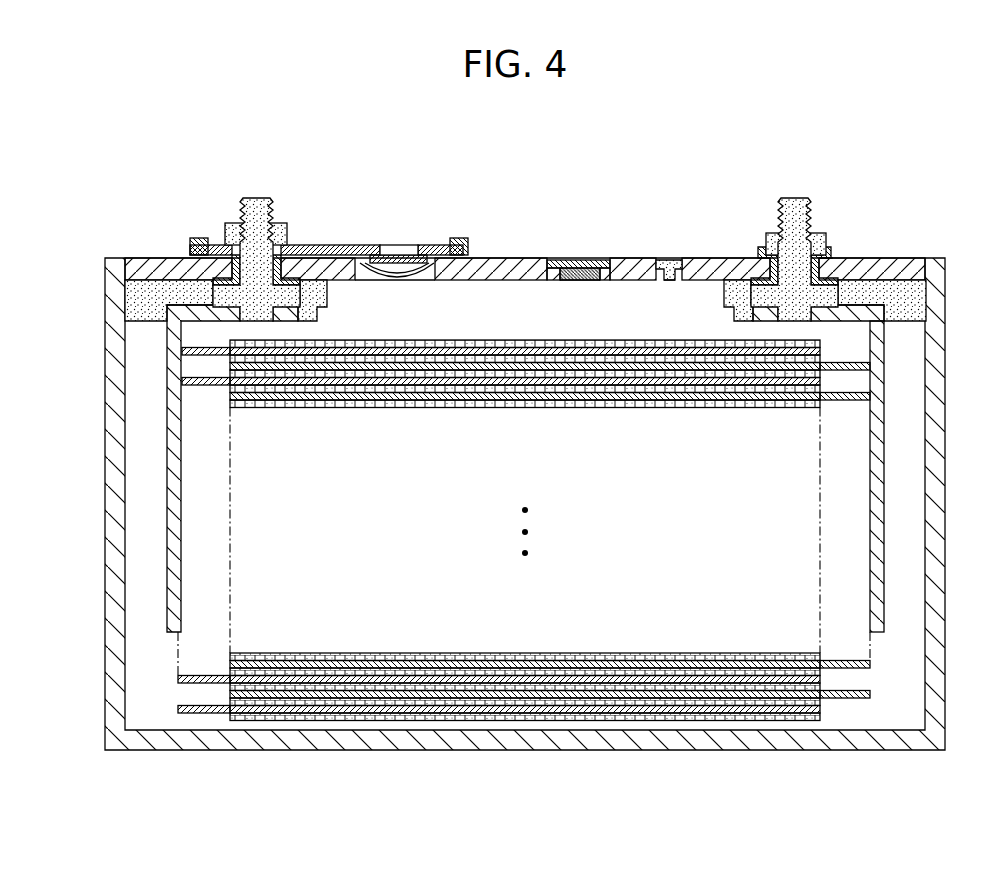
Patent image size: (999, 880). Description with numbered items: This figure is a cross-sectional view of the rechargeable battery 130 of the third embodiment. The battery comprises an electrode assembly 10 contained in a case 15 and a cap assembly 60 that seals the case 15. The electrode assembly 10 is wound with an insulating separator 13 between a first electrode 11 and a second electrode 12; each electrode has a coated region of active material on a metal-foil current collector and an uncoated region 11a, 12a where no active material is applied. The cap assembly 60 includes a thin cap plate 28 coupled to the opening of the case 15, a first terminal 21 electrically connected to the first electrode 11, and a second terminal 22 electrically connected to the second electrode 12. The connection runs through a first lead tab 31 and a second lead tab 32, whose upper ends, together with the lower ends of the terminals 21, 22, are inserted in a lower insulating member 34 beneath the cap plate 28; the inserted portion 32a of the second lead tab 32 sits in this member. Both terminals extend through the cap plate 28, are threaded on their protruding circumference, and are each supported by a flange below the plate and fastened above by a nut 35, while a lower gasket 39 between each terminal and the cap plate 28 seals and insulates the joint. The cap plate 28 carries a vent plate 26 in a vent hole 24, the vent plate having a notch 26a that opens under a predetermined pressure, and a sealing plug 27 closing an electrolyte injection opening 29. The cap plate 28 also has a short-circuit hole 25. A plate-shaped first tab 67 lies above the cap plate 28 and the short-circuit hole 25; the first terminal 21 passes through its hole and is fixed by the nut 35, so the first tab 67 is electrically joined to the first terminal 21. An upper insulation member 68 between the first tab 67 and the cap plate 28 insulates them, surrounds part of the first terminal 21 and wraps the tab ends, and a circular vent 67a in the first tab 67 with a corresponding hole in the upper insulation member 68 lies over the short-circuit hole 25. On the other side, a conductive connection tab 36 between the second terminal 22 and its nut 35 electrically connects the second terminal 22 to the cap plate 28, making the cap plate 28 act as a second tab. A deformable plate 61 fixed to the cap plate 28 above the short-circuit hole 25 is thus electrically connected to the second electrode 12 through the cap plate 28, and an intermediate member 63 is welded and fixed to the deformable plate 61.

The rechargeable battery 130 is at (686, 153).
The electrode assembly 10 is at (524, 575).
The first electrode 11 is at (323, 718).
The uncoated region 11a is at (195, 719).
The second electrode 12 is at (720, 702).
The uncoated region 12a is at (855, 701).
The separator 13 is at (530, 686).
The case 15 is at (937, 440).
The first terminal 21 is at (253, 198).
The second terminal 22 is at (794, 198).
The vent hole 24 is at (583, 273).
The short-circuit hole 25 is at (375, 283).
The vent plate 26 is at (599, 262).
The notch 26a is at (568, 266).
The sealing plug 27 is at (667, 260).
The cap plate 28 is at (701, 271).
The electrolyte injection opening 29 is at (666, 282).
The first lead tab 31 is at (170, 468).
The second lead tab 32 is at (877, 570).
The collar of positive current collecting member 32a is at (852, 314).
The lower insulating member 34 is at (135, 300).
The nut 35 is at (284, 235).
The conductive connection tab 36 is at (831, 252).
The lower gasket 39 is at (238, 277).
The cap assembly 60 is at (445, 254).
The deformable plate 61 is at (418, 268).
The intermediate member 63 is at (408, 257).
The first tab 67 is at (339, 214).
The circular vent 67a is at (390, 244).
The upper insulation member 68 is at (457, 240).